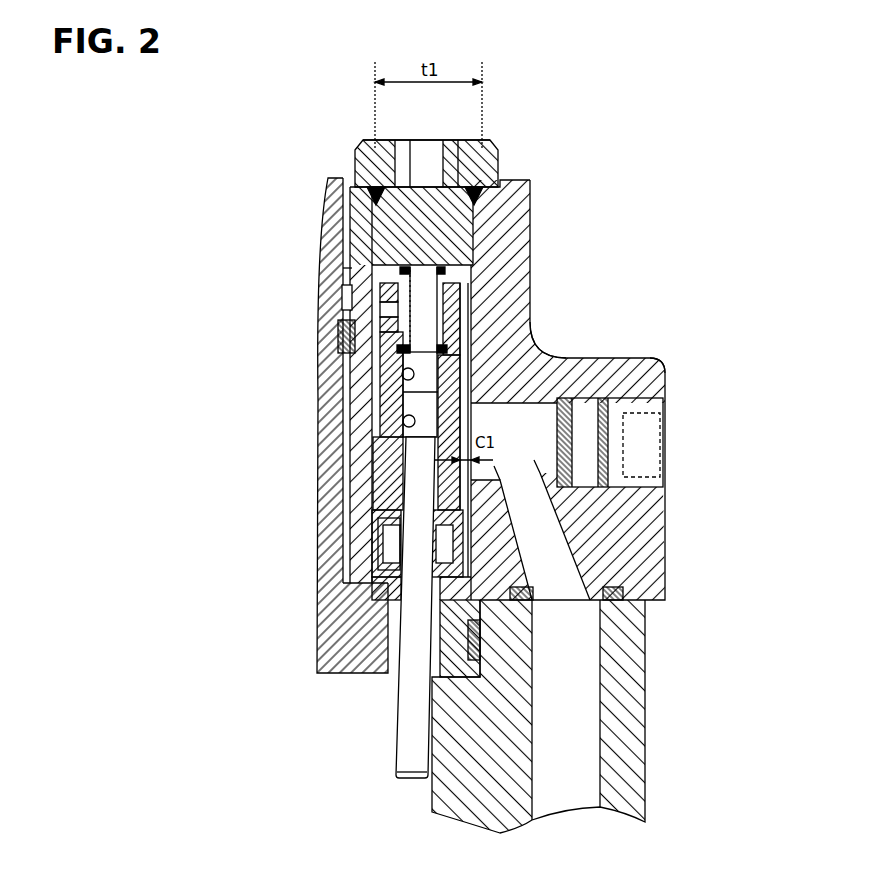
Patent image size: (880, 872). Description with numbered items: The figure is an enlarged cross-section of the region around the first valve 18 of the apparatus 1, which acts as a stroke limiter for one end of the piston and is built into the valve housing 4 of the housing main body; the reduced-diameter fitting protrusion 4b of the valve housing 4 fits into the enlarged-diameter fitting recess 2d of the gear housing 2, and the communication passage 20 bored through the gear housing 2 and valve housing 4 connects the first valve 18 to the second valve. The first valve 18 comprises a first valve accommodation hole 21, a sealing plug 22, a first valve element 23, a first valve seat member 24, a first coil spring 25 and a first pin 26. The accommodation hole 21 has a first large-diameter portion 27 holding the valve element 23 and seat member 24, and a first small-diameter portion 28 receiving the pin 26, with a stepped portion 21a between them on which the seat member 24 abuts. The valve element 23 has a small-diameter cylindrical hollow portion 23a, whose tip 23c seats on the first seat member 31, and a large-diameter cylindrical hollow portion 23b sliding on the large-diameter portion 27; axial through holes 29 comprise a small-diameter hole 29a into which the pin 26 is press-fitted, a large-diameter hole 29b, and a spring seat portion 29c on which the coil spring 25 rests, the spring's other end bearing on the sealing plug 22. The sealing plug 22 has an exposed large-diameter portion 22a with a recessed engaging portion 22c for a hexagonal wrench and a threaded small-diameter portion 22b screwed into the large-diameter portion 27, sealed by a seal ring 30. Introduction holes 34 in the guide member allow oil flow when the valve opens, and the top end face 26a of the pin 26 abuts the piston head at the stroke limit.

The valve device 1 is at (676, 368).
The gear housing 2 is at (655, 681).
The fitting recess 2d is at (470, 650).
The valve housing 4 is at (537, 179).
The fitting protrusion 4b is at (490, 718).
The first valve 18 is at (478, 333).
The communication passage 20 is at (535, 598).
The first valve accommodation hole 21 is at (398, 455).
The stepped portion 21a is at (397, 585).
The sealing plug 22 is at (351, 170).
The large-diameter portion 22a is at (357, 145).
The small-diameter portion 22b is at (485, 236).
The engaging portion 22c is at (455, 140).
The first valve element 23 is at (395, 416).
The small-diameter cylindrical hollow portion 23a is at (480, 372).
The large-diameter cylindrical hollow portion 23b is at (347, 312).
The tip 23c is at (430, 535).
The first valve seat member 24 is at (395, 555).
The first coil spring 25 is at (535, 300).
The first pin 26 is at (402, 707).
The top end face 26a is at (400, 782).
The first large-diameter portion 27 is at (395, 485).
The first small-diameter portion 28 is at (360, 628).
The axial through holes 29 is at (325, 396).
The small-diameter hole 29a is at (385, 440).
The large-diameter hole 29b is at (352, 272).
The spring seat portion 29c is at (345, 346).
The seal ring 30 is at (485, 187).
The first seat member 31 is at (545, 472).
The introduction holes 34 is at (462, 540).